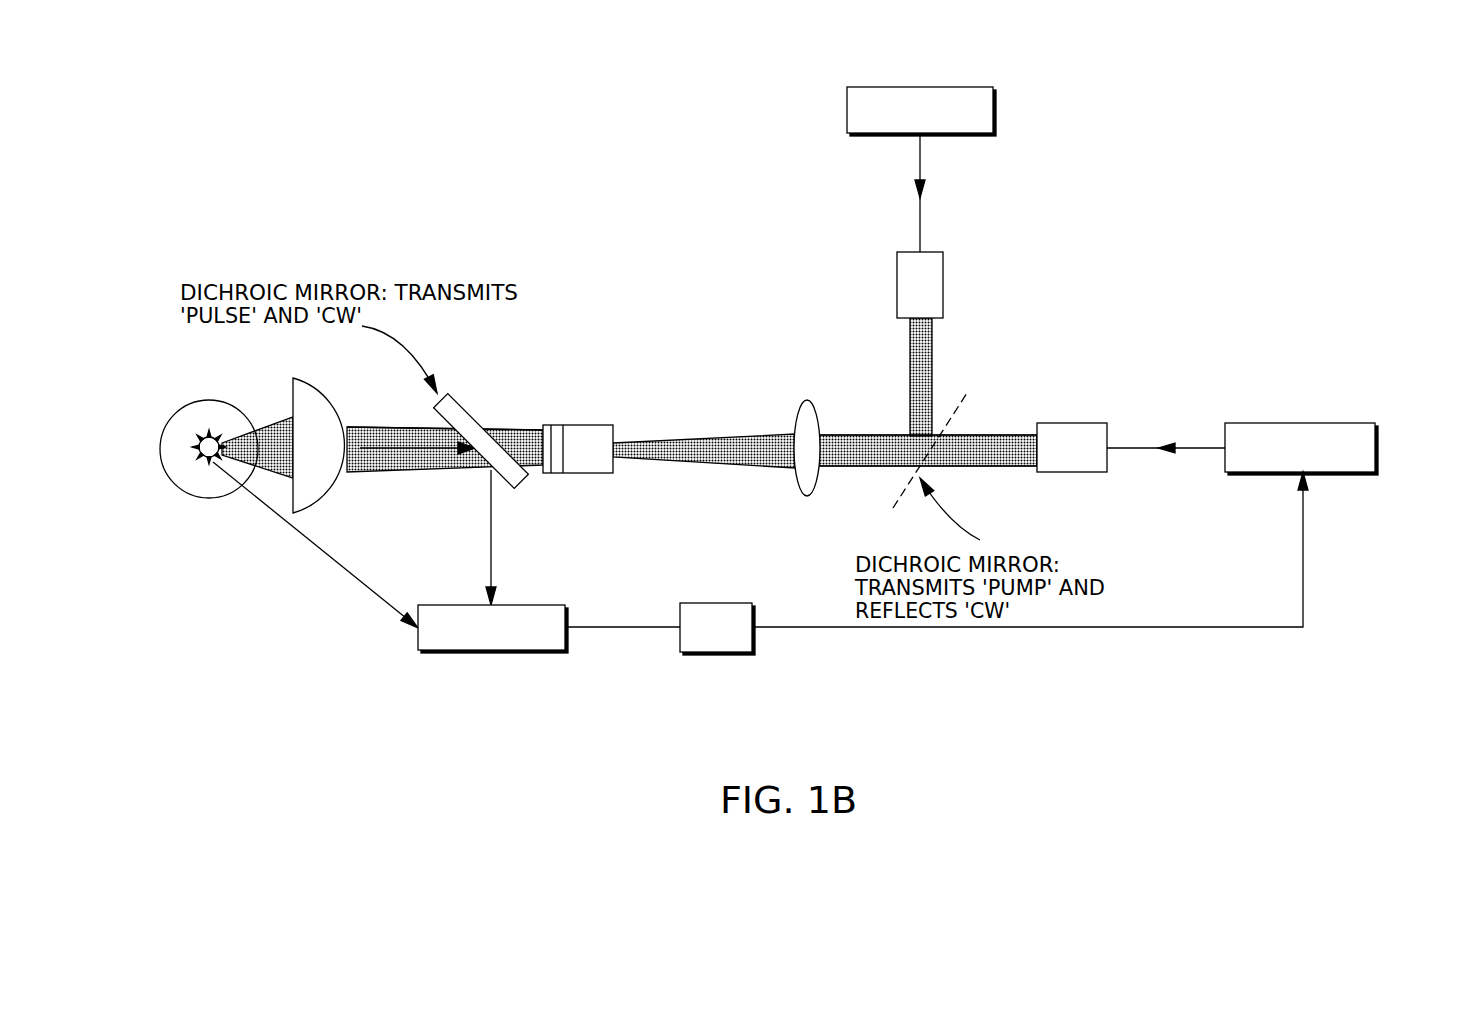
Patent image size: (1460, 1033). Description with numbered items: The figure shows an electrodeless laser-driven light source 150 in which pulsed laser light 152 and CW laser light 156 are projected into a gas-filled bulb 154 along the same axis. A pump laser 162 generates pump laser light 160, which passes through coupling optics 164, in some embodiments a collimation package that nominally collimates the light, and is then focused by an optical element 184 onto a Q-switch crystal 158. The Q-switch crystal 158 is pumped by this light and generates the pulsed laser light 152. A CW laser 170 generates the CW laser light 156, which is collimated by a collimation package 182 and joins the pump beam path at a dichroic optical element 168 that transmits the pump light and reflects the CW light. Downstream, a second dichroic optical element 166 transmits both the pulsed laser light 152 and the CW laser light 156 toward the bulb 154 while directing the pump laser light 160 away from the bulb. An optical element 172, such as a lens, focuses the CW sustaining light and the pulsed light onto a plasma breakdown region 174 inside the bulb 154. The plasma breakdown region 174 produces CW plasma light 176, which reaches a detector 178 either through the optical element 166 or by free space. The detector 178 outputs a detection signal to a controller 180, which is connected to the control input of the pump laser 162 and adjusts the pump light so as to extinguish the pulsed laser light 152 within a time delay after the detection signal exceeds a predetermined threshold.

The electrodeless laser-driven light source 150 is at (228, 135).
The pulsed laser light 152 is at (388, 437).
The gas-filled bulb 154 is at (210, 400).
The CW laser light 156 is at (918, 380).
The Q-switch crystal 158 is at (582, 435).
The pump laser light 160 is at (1000, 458).
The pump laser 162 is at (1378, 450).
The coupling optics 164 is at (1075, 425).
The optical element 166 is at (470, 425).
The optical element 168 is at (958, 410).
The CW laser 170 is at (847, 110).
The optical element 172 is at (303, 398).
The plasma breakdown region 174 is at (200, 460).
The CW plasma light 176 is at (491, 542).
The detector 178 is at (490, 652).
The controller 180 is at (717, 605).
The collimation package 182 is at (897, 286).
The optical element 184 is at (800, 470).